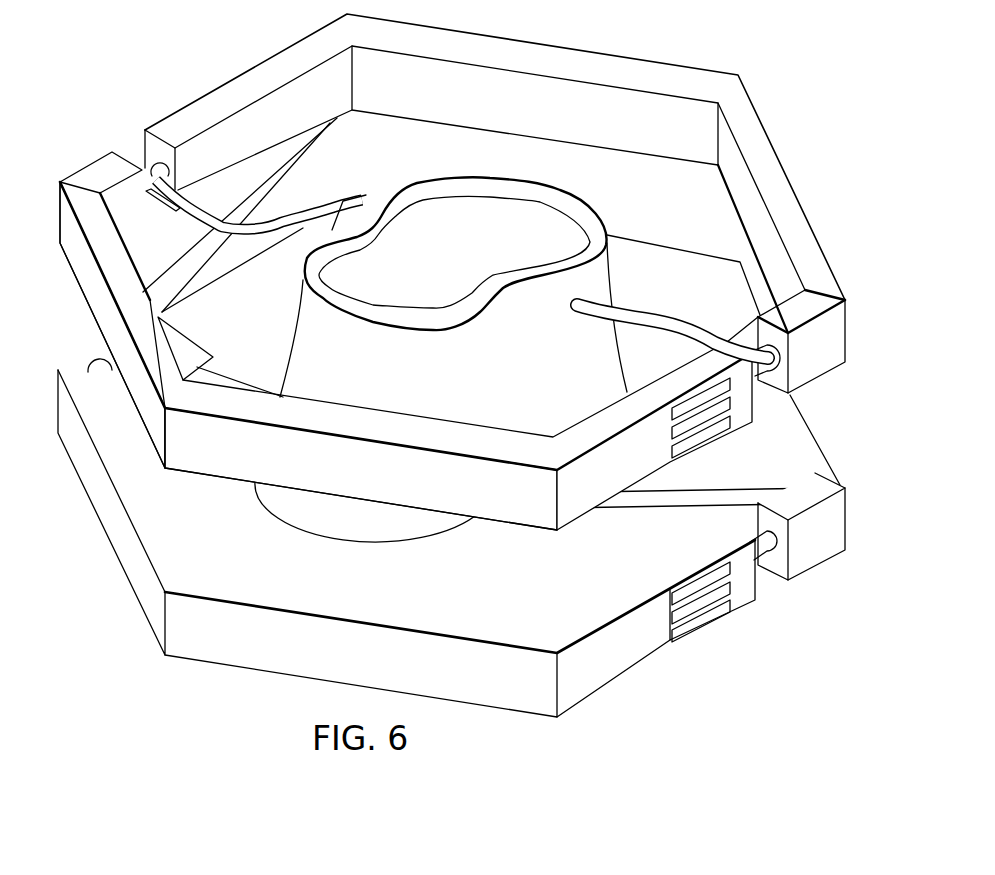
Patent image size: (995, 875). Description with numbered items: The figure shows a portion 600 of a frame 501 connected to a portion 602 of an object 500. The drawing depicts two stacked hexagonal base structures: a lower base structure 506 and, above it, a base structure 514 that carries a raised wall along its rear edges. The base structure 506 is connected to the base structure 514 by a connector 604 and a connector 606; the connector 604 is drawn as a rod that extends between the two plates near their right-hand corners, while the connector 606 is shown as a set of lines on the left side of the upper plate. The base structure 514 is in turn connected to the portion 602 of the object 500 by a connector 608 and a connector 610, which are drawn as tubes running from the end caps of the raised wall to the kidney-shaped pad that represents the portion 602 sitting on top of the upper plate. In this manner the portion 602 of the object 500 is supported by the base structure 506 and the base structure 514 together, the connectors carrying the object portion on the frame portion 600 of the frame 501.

The object 500 is at (424, 341).
The frame 501 is at (188, 103).
The base structure 514 is at (650, 68).
The portion of frame 600 is at (451, 540).
The portion of object 602 is at (536, 306).
The connector 604 is at (766, 490).
The connector 606 is at (183, 280).
The connector 608 is at (683, 323).
The connector 610 is at (302, 220).
The base structure 506 is at (622, 668).